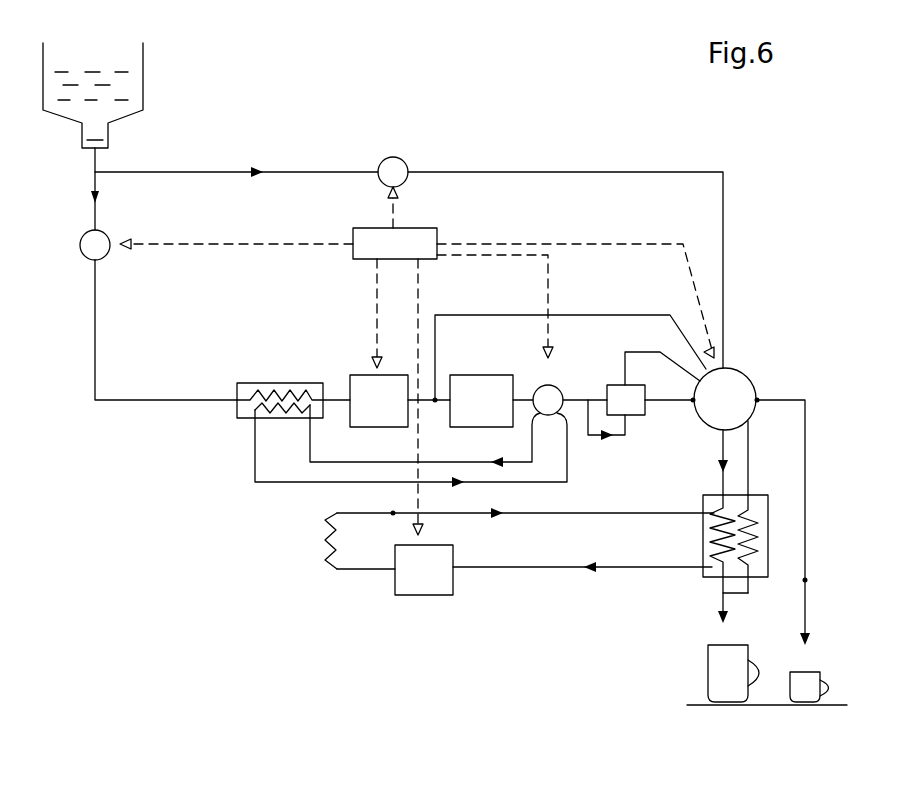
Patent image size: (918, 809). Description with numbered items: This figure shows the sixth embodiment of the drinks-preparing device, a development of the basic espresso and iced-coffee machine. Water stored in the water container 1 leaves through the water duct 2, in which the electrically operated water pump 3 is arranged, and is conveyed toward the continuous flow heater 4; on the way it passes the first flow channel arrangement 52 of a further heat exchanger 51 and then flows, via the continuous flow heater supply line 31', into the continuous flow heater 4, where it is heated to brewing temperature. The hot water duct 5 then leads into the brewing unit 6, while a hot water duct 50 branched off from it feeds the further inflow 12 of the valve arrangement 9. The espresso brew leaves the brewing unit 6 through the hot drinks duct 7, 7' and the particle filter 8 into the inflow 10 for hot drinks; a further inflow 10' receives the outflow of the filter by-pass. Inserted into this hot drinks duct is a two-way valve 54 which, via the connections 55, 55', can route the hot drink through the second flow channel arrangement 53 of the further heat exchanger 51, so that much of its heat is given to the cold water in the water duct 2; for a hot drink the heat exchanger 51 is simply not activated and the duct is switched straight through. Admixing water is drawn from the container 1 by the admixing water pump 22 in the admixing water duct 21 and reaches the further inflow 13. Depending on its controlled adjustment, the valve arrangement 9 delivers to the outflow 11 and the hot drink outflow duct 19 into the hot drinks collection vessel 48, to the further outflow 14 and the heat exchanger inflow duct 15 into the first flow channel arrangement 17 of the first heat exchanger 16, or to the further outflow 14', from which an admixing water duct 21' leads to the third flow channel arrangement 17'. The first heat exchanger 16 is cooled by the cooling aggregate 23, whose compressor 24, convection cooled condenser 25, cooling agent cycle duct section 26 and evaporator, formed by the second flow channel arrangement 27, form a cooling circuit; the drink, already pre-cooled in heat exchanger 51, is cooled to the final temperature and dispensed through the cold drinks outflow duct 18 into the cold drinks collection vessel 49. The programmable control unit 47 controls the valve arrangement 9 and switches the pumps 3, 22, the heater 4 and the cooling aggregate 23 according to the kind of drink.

The water container 1 is at (125, 92).
The water duct 2 is at (67, 189).
The water pump 3 is at (92, 250).
The continuous flow heater 4 is at (383, 392).
The hot water duct 5 is at (425, 403).
The brewing unit 6 is at (473, 392).
The hot drinks duct 7 is at (523, 362).
The hot drinks duct 7' is at (585, 375).
The particle filter 8 is at (620, 397).
The valve arrangement 9 is at (733, 392).
The inflow 10 is at (670, 421).
The further inflow 10' is at (670, 378).
The outflow 11 is at (758, 398).
The further inflow 12 is at (698, 376).
The further inflow 13 is at (730, 365).
The further outflow 14 is at (708, 462).
The further outflow 14' is at (773, 450).
The heat exchanger inflow duct 15 is at (722, 482).
The first heat exchanger 16 is at (688, 542).
The first flow channel arrangement 17 is at (715, 548).
The third flow channel arrangement 17' is at (770, 544).
The cold drinks outflow duct 18 is at (722, 605).
The hot drink outflow duct 19 is at (802, 582).
The admixing water duct 21 is at (409, 244).
The line 21' is at (774, 460).
The admixing water pump 22 is at (392, 170).
The cooling aggregate 23 is at (410, 607).
The compressor 24 is at (433, 565).
The condenser 25 is at (323, 537).
The cooling agent cycle duct section 26 is at (393, 513).
The second flow channel arrangement 27 is at (710, 555).
The continuous flow heater supply line 31' is at (337, 366).
The control unit 47 is at (412, 236).
The hot drinks collection vessel 48 is at (812, 692).
The cold drinks collection vessel 49 is at (722, 670).
The hot water duct 50 is at (497, 315).
The further heat exchanger 51 is at (232, 366).
The first flow channel arrangement 52 is at (280, 392).
The second flow channel arrangement 53 is at (290, 407).
The valve 54 is at (557, 382).
The line 55 is at (425, 436).
The line 55' is at (440, 448).